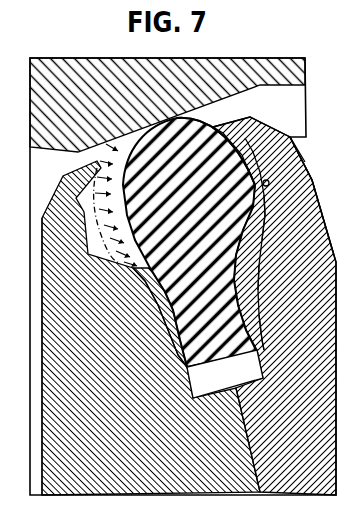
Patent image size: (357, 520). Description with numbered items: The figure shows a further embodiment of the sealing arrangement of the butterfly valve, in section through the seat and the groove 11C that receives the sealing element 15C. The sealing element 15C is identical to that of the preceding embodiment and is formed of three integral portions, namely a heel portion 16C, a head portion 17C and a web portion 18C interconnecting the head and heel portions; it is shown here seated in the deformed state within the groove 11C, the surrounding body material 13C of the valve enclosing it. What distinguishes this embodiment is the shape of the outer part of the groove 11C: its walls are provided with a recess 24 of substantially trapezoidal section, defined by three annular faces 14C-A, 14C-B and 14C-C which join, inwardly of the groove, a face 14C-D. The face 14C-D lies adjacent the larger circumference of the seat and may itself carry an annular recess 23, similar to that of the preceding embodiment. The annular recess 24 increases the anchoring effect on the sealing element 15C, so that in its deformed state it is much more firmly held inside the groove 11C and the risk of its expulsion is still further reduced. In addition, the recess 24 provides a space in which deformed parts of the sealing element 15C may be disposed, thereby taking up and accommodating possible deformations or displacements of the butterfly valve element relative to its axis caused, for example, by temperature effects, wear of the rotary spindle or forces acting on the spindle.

The groove 11C is at (182, 148).
The lower body 13C is at (243, 385).
The annular face 14C-A is at (255, 119).
The annular face 14C-B is at (274, 160).
The annular face 14C-C is at (262, 214).
The face 14C-D is at (270, 246).
The sealing element 15C is at (157, 128).
The heel portion 16C is at (255, 332).
The head portion 17C is at (215, 165).
The web portion 18C is at (168, 356).
The annular recess 23 is at (256, 275).
The recess 24 is at (62, 188).